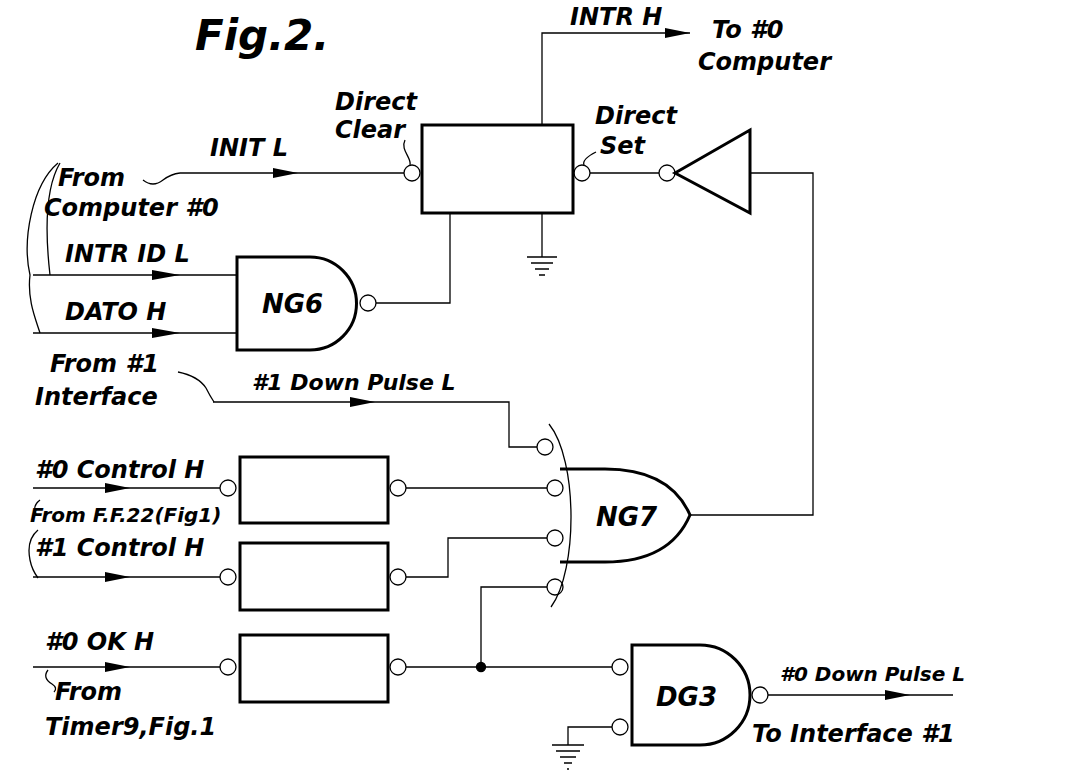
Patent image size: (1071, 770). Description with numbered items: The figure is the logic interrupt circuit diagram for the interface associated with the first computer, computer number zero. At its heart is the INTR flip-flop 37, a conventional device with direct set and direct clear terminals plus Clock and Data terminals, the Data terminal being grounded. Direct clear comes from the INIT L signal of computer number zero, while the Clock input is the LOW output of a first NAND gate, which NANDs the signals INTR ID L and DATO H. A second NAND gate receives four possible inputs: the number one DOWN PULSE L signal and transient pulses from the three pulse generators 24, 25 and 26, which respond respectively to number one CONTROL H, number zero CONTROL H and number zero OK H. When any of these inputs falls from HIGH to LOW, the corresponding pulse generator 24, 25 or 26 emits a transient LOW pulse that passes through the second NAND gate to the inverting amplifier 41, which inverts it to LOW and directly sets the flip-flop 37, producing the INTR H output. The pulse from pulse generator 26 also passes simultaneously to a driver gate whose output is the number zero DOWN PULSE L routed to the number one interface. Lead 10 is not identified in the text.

The INTR flip-flop 37 is at (484, 125).
The inverting amplifier 41 is at (722, 158).
The #0 Control H line from flip-flop 22 10 is at (183, 487).
The pulse generator 25 is at (370, 477).
The pulse generator 24 is at (370, 560).
The pulse generator 26 is at (370, 655).